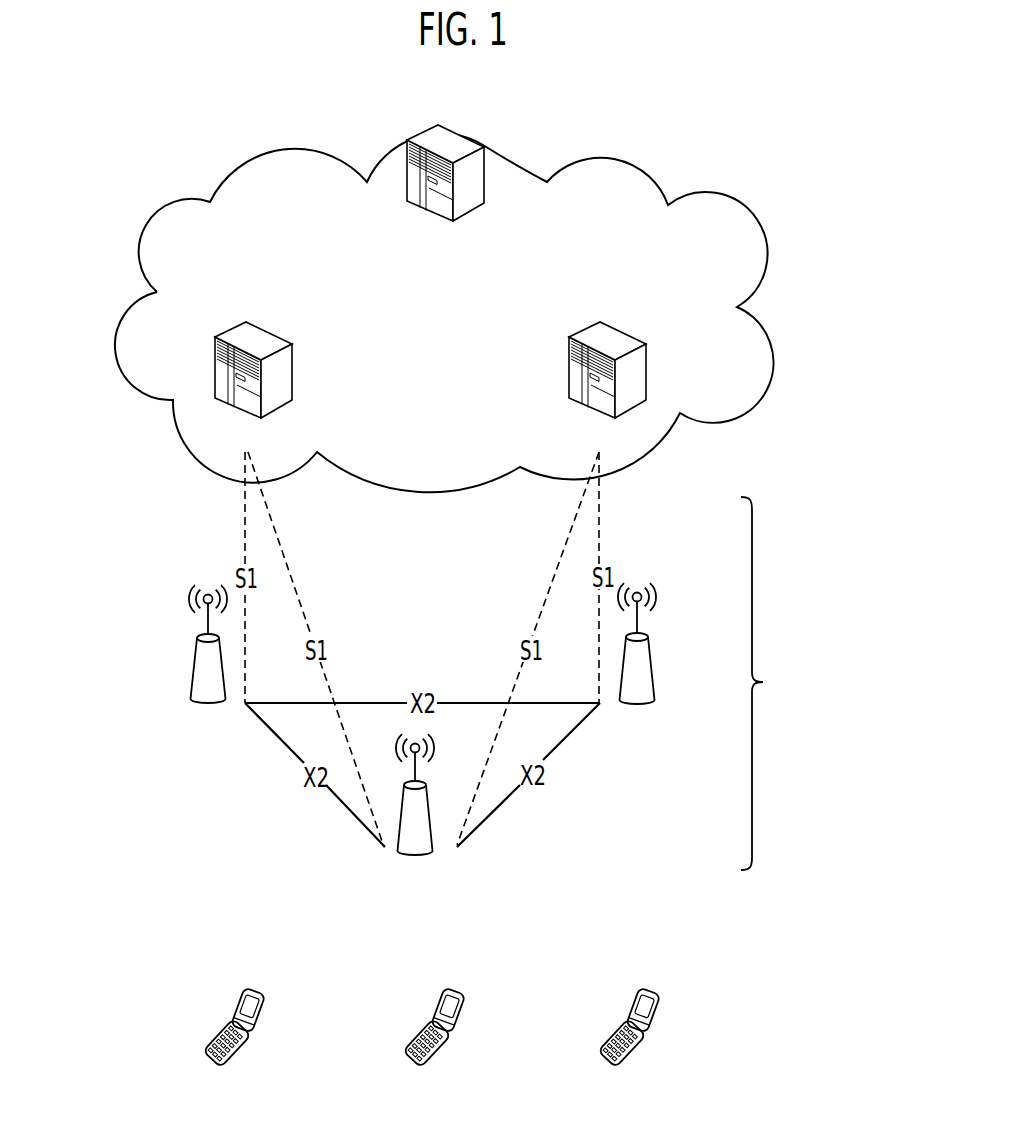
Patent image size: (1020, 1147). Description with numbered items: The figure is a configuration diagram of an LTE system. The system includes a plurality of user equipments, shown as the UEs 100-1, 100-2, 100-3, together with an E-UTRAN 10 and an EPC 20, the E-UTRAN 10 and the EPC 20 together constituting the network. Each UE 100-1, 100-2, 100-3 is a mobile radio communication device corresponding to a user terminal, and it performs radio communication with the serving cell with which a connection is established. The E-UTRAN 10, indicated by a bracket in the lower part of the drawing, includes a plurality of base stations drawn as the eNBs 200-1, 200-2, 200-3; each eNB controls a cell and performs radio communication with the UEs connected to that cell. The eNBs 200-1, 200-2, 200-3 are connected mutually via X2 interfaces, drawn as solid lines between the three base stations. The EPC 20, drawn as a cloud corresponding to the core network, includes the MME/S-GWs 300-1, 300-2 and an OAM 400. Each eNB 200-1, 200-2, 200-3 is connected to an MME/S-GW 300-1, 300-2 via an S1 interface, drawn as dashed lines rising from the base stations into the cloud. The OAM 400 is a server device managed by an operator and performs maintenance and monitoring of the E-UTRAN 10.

The E-UTRAN 10 is at (801, 683).
The EPC 20 is at (648, 173).
The UE 100-1 is at (255, 992).
The UE 100-2 is at (455, 992).
The UE 100-3 is at (648, 993).
The eNB 200-1 is at (195, 672).
The eNB 200-2 is at (432, 828).
The eNB 200-3 is at (677, 643).
The MME/S-GW 300-1 is at (275, 332).
The MME/S-GW 300-2 is at (622, 332).
The OAM 400 is at (435, 125).